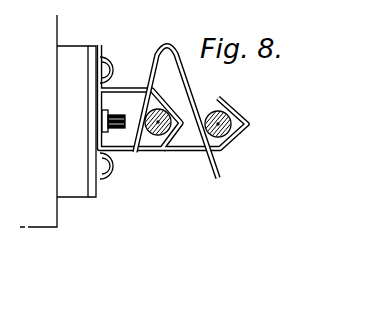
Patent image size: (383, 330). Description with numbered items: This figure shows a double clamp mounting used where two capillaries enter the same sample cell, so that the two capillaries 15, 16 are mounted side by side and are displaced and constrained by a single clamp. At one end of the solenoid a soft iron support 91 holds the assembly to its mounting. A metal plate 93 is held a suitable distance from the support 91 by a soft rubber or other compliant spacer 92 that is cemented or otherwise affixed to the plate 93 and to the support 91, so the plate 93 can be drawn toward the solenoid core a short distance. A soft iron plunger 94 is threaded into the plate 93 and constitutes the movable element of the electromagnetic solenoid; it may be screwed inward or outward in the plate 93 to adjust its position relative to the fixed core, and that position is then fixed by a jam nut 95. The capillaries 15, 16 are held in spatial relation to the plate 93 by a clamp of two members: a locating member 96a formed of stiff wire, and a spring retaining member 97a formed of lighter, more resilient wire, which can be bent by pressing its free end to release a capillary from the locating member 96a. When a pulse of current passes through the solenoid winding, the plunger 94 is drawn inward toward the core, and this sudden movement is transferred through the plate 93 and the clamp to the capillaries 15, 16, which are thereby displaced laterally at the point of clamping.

The soft iron support 91 is at (48, 218).
The compliant spacer 92 is at (78, 198).
The metal plate 93 is at (98, 197).
The soft iron plunger 94 is at (124, 112).
The jam nut 95 is at (101, 111).
The capillary 15 is at (154, 138).
The capillary 16 is at (209, 108).
The locating member 96a is at (234, 138).
The spring retaining member 97a is at (221, 170).